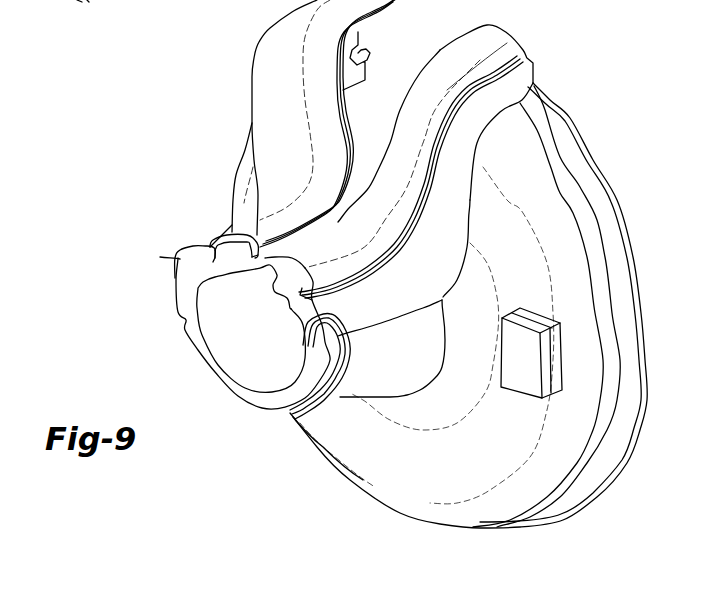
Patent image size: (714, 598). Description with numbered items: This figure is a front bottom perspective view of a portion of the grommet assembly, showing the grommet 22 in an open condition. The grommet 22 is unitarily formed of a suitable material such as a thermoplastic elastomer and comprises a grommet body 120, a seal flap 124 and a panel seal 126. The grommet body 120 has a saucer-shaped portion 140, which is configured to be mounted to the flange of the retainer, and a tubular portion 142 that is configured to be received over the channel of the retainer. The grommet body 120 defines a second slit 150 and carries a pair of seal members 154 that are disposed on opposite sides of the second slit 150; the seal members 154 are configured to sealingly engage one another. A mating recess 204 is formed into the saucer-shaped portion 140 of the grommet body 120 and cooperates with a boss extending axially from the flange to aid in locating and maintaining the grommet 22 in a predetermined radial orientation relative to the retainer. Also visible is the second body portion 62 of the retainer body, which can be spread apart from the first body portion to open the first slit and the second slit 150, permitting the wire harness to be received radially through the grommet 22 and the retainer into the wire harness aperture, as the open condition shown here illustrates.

The grommet 22 is at (135, 290).
The second body portion 62 is at (295, 45).
The grommet body 120 is at (529, 184).
The seal flap 124 is at (272, 107).
The panel seal 126 is at (572, 118).
The saucer-shaped portion 140 is at (357, 447).
The tubular portion 142 is at (350, 390).
The second slit 150 is at (270, 277).
The seal members 154 is at (227, 274).
The mating recess 204 is at (527, 367).